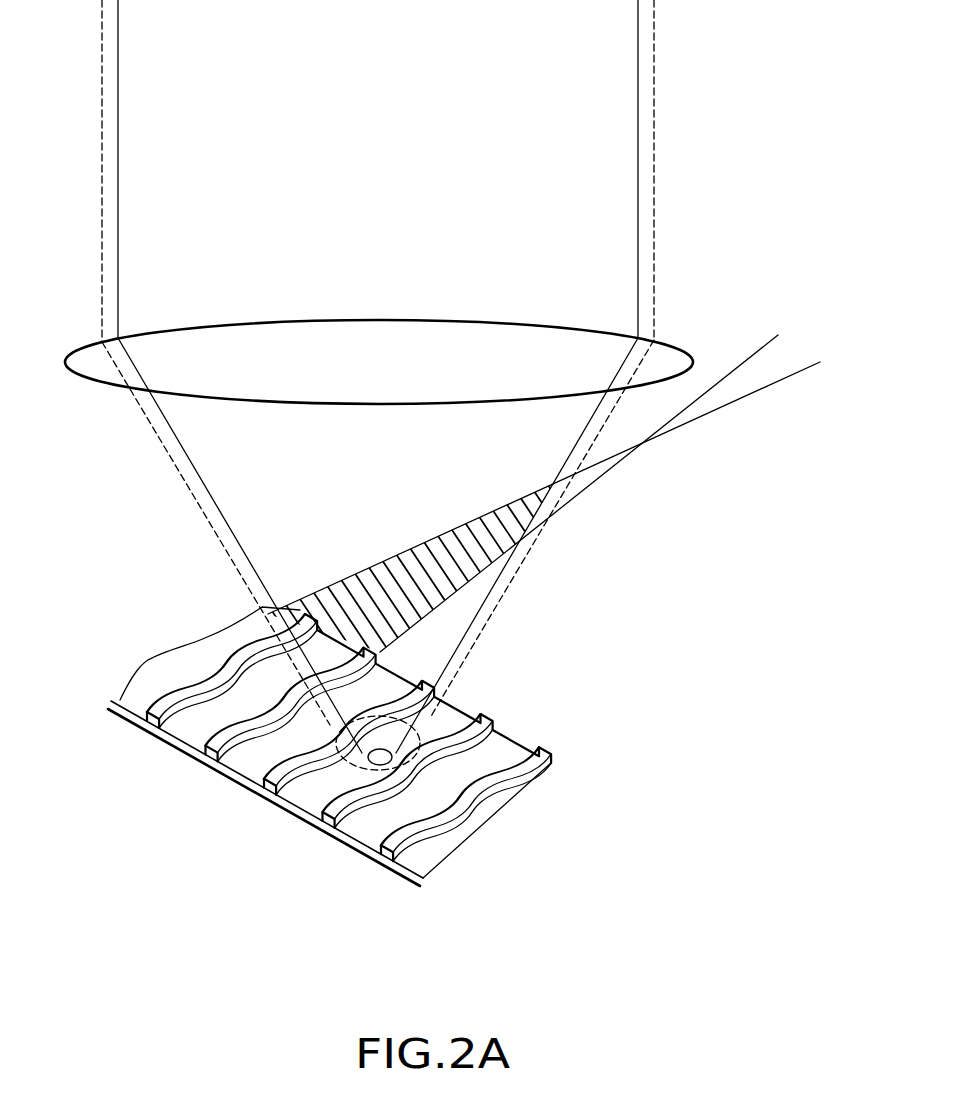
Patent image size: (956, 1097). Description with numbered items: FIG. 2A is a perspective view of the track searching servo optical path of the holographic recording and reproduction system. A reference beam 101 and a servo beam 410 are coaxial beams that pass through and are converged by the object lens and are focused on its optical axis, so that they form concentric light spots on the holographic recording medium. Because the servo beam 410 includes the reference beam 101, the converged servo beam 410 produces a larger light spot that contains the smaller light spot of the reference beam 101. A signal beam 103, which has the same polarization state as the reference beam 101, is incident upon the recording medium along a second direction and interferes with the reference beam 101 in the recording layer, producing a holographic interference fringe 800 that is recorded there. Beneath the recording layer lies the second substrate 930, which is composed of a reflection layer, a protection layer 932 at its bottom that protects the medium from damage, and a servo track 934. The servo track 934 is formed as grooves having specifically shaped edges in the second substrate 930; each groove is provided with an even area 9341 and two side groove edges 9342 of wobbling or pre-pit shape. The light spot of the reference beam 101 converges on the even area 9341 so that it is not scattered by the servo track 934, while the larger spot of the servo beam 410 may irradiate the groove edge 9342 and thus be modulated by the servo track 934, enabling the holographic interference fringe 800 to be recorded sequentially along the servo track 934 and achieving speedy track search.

The reference beam 101 is at (225, 468).
The signal beam 103 is at (732, 388).
The servo beam 410 is at (165, 448).
The holographic interference fringe 800 is at (430, 597).
The second substrate 930 is at (368, 766).
The protection layer 932 is at (348, 843).
The servo track 934 is at (383, 862).
The even area 9341 is at (247, 763).
The groove edge 9342 is at (181, 732).